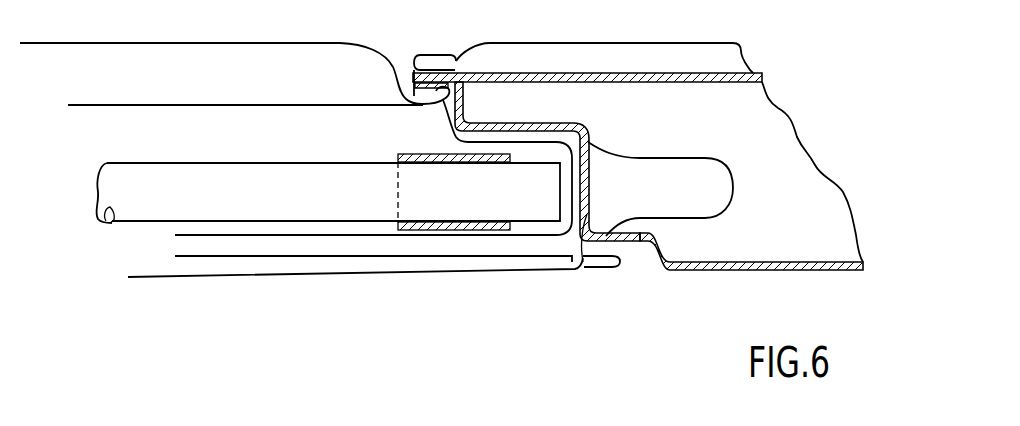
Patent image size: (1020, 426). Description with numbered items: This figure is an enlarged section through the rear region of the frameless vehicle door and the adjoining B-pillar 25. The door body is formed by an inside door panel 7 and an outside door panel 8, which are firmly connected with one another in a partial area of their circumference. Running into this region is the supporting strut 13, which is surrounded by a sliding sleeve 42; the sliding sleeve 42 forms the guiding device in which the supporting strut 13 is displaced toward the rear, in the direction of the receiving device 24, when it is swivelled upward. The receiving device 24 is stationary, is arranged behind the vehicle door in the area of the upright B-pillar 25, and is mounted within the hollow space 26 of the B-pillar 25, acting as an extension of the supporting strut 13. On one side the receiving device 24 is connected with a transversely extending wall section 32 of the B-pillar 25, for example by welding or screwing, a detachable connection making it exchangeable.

The inside door panel 7 is at (172, 104).
The outside door panel 8 is at (182, 278).
The supporting strut 13 is at (253, 175).
The sliding sleeve 42 is at (433, 230).
The hollow space 26 is at (734, 101).
The B-pillar 25 is at (651, 258).
The receiving device 24 is at (731, 219).
The wall section 32 is at (582, 266).